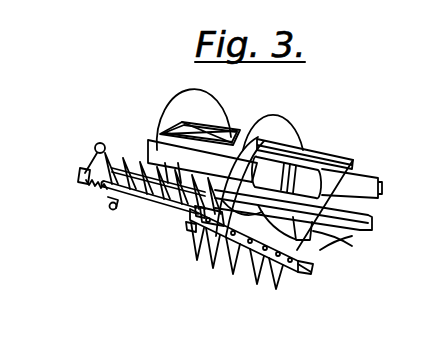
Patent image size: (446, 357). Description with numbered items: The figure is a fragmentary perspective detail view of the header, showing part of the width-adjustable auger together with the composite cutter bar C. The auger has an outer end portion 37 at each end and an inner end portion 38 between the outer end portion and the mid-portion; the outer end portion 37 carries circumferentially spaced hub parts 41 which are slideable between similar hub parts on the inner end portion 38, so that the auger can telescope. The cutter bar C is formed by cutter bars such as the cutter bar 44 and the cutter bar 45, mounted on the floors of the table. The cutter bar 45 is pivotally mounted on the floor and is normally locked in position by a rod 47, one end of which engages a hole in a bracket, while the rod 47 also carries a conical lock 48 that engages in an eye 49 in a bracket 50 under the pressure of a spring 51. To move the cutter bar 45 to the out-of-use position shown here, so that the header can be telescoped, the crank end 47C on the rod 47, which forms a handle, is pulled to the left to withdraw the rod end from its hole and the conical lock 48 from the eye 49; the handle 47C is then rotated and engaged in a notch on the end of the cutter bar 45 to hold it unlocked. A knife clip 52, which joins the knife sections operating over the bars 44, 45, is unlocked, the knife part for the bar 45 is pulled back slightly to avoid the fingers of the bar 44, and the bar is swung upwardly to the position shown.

The outer end portion 37 is at (150, 123).
The hub parts 41 is at (172, 146).
The crank end 47C is at (94, 154).
The spring 51 is at (80, 177).
The conical lock 48 is at (104, 191).
The bracket 50 is at (110, 205).
The eye 49 is at (111, 210).
The cutter bar 45 is at (165, 211).
The rod 47 is at (180, 218).
The knife clip 52 is at (188, 229).
The cutter bar 44 is at (251, 262).
The inner end portion 38 is at (337, 244).
The cutter bar C is at (216, 264).